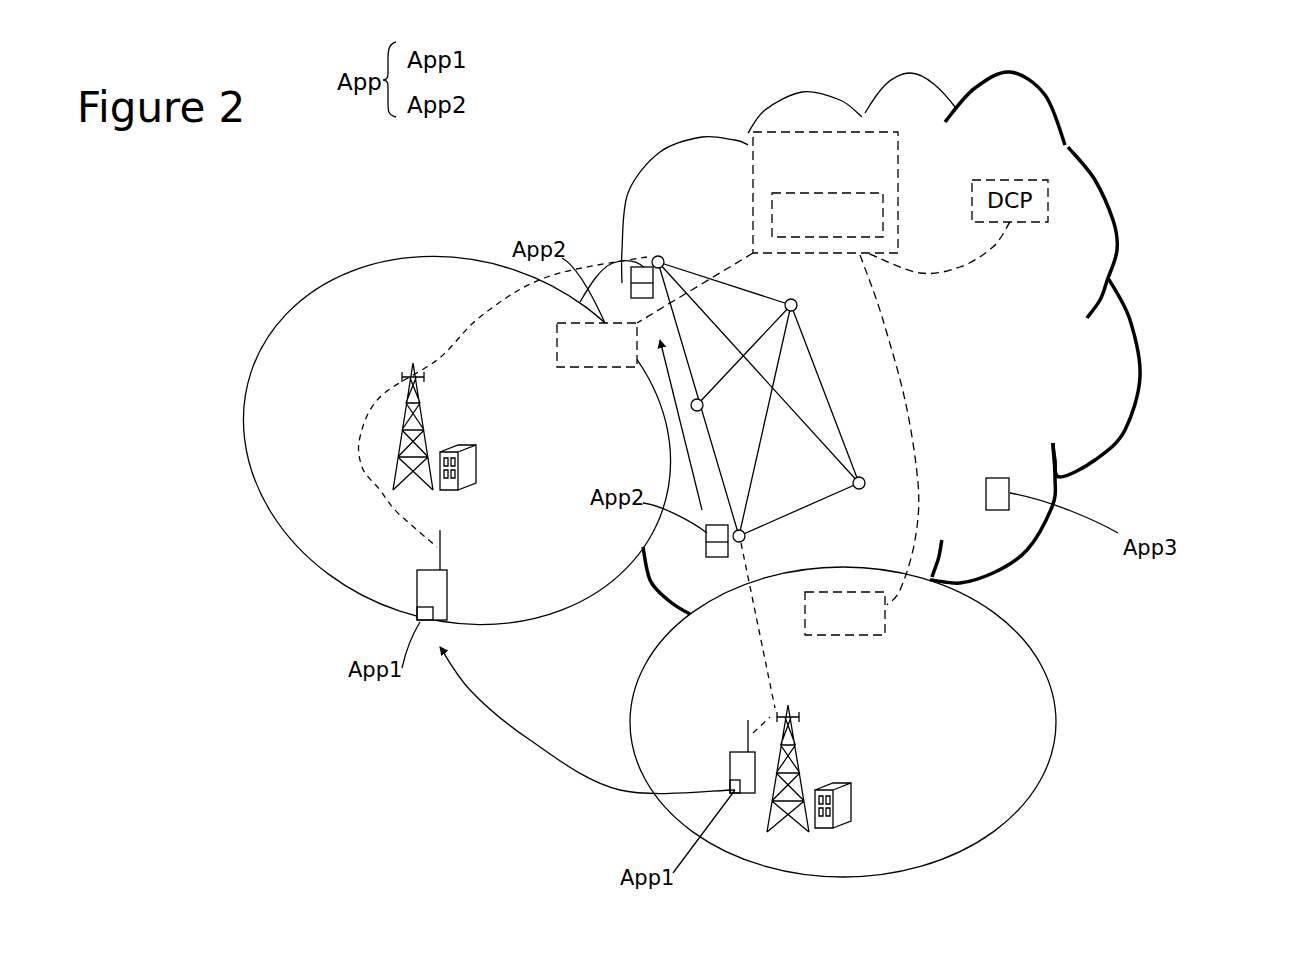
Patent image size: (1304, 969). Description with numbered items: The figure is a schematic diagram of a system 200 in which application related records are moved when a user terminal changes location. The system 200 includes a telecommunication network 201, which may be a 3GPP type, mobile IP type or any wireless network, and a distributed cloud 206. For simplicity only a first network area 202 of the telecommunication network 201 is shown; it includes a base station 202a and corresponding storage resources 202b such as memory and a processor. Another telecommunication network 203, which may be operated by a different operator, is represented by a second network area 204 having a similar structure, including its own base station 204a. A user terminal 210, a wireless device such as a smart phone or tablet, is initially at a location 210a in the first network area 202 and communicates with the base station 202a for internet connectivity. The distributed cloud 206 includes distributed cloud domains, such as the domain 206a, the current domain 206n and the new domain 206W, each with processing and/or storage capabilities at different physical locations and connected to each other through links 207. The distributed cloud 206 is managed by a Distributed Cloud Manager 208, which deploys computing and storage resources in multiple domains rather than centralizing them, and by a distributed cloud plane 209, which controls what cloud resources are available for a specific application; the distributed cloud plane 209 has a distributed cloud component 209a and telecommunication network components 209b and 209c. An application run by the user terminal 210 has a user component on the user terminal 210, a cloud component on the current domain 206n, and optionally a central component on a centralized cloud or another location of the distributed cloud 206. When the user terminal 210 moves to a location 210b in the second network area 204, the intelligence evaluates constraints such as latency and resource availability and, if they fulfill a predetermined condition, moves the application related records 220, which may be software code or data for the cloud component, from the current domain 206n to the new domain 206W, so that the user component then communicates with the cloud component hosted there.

The system 200 is at (628, 40).
The telecommunication network 201 is at (1064, 672).
The first network area 202 is at (1058, 723).
The base station 202a is at (767, 827).
The storage resources 202b is at (840, 813).
The telecommunication network 203 is at (262, 292).
The second network area 204 is at (413, 260).
The base station 204a is at (396, 425).
The distributed cloud 206 is at (1013, 70).
The new distributed cloud domain 206W is at (633, 263).
The distributed cloud domain 206a is at (793, 300).
The current distributed cloud domain 206n is at (745, 537).
The links 207 is at (813, 437).
The Distributed Cloud Manager (DCM) 208 is at (768, 148).
The distributed cloud plane (DCP) 209 is at (1238, 65).
The distributed cloud component 209a is at (867, 193).
The telecommunication network component 209b is at (845, 636).
The telecommunication network component 209c is at (568, 367).
The user terminal 210 is at (448, 608).
The location 210a is at (725, 773).
The location 210b is at (403, 617).
The application related records 220 is at (643, 257).